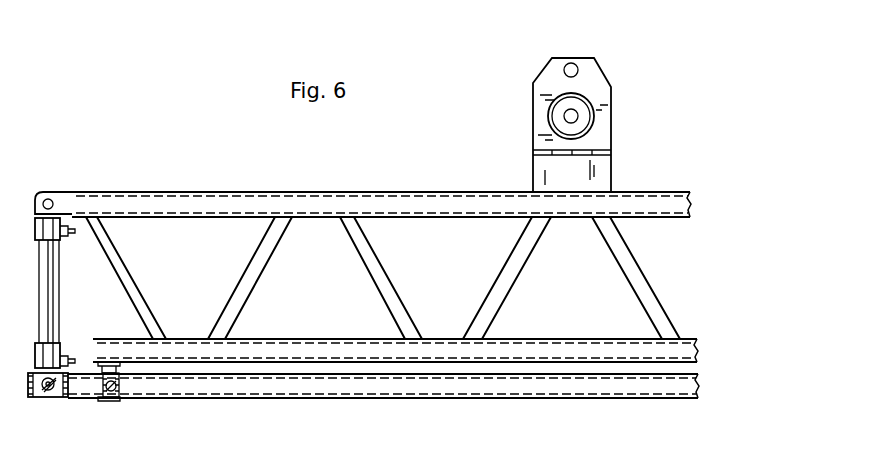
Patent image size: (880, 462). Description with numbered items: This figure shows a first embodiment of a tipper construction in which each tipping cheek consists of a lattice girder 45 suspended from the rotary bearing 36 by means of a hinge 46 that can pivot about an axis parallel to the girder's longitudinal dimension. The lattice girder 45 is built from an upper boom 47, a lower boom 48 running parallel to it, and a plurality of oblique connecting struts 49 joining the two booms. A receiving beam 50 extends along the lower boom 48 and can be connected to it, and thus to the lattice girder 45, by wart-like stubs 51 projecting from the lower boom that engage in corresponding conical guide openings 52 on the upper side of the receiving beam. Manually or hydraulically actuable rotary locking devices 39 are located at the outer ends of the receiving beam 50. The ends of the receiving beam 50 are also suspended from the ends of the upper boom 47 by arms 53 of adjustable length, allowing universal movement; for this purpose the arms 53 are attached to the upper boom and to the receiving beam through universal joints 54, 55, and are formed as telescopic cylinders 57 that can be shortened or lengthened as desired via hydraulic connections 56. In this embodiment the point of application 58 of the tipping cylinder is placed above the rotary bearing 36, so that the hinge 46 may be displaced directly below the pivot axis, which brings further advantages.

The rotary bearing 36 is at (576, 117).
The rotary locking device 39 is at (52, 395).
The lattice girder 45 is at (426, 190).
The hinge 46 is at (547, 157).
The upper boom 47 is at (233, 198).
The lower boom 48 is at (334, 345).
The oblique connecting struts 49 is at (247, 284).
The receiving beam 50 is at (277, 394).
The wart-like stubs 51 is at (120, 385).
The conical guide openings 52 is at (113, 402).
The arms of adjustable length 53 is at (36, 291).
The universal joint 54 is at (49, 199).
The universal joint 55 is at (43, 396).
The hydraulic connections 56 is at (73, 232).
The telescopic cylinder 57 is at (39, 354).
The point of application of the tipping cylinder 58 is at (572, 69).